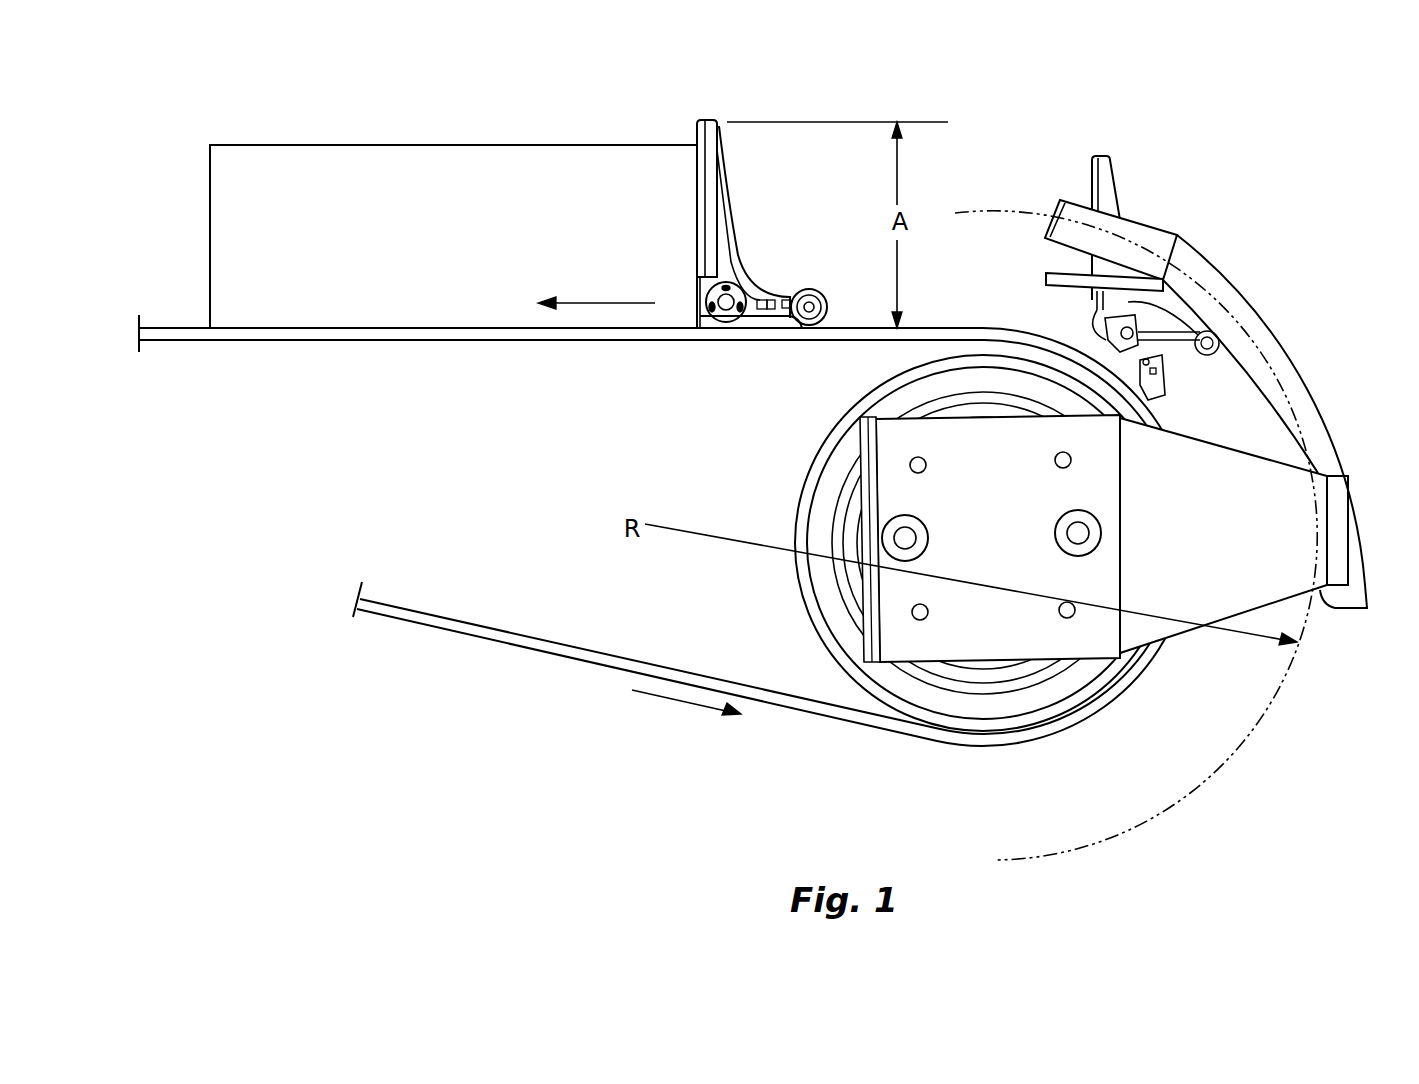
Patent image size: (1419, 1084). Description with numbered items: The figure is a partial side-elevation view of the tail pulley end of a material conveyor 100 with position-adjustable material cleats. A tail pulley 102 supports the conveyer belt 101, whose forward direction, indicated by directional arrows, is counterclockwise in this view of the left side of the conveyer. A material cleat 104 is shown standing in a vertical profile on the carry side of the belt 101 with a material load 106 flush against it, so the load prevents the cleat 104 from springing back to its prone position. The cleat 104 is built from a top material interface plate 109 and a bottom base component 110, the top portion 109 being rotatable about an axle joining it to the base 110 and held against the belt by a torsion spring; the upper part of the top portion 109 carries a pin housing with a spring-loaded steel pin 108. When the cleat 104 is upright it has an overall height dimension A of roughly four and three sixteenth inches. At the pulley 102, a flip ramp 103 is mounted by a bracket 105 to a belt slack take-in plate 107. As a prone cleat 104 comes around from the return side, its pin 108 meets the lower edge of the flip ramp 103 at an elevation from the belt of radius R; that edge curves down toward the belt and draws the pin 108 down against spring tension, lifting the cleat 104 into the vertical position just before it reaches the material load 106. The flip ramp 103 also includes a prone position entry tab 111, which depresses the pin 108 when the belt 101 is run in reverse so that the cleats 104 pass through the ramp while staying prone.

The material conveyor 100 is at (1270, 209).
The conveyer belt 101 is at (403, 340).
The tail pulley 102 is at (795, 510).
The flip ramp 103 is at (1282, 347).
The material cleat 104 is at (752, 229).
The bracket 105 is at (1193, 438).
The material load 106 is at (380, 145).
The belt slack take in plate 107 is at (1050, 683).
The spring-loaded steel pin 108 is at (1103, 348).
The top material interface plate 109 is at (693, 195).
The bottom base component 110 is at (1148, 367).
The prone position entry tab 111 is at (1137, 213).